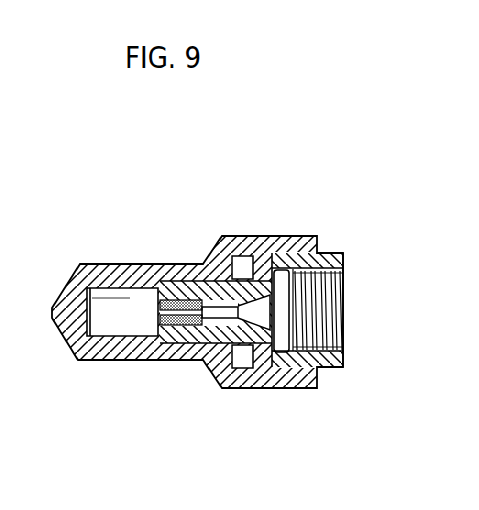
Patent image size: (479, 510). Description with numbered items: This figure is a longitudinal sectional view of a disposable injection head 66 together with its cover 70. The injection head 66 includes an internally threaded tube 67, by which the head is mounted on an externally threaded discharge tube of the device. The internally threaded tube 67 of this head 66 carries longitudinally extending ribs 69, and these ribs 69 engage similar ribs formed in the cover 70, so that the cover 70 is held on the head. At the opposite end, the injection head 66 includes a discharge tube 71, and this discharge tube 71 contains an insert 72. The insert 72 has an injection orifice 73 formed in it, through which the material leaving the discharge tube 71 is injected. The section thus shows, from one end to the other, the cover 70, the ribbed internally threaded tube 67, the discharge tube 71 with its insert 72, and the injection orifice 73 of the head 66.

The cover 70 is at (188, 265).
The longitudinally extending ribs 69 is at (276, 252).
The internally threaded tube 67 is at (340, 253).
The disposable injection head 66 is at (343, 335).
The injection orifice 73 is at (155, 311).
The insert 72 is at (184, 322).
The discharge tube 71 is at (197, 330).